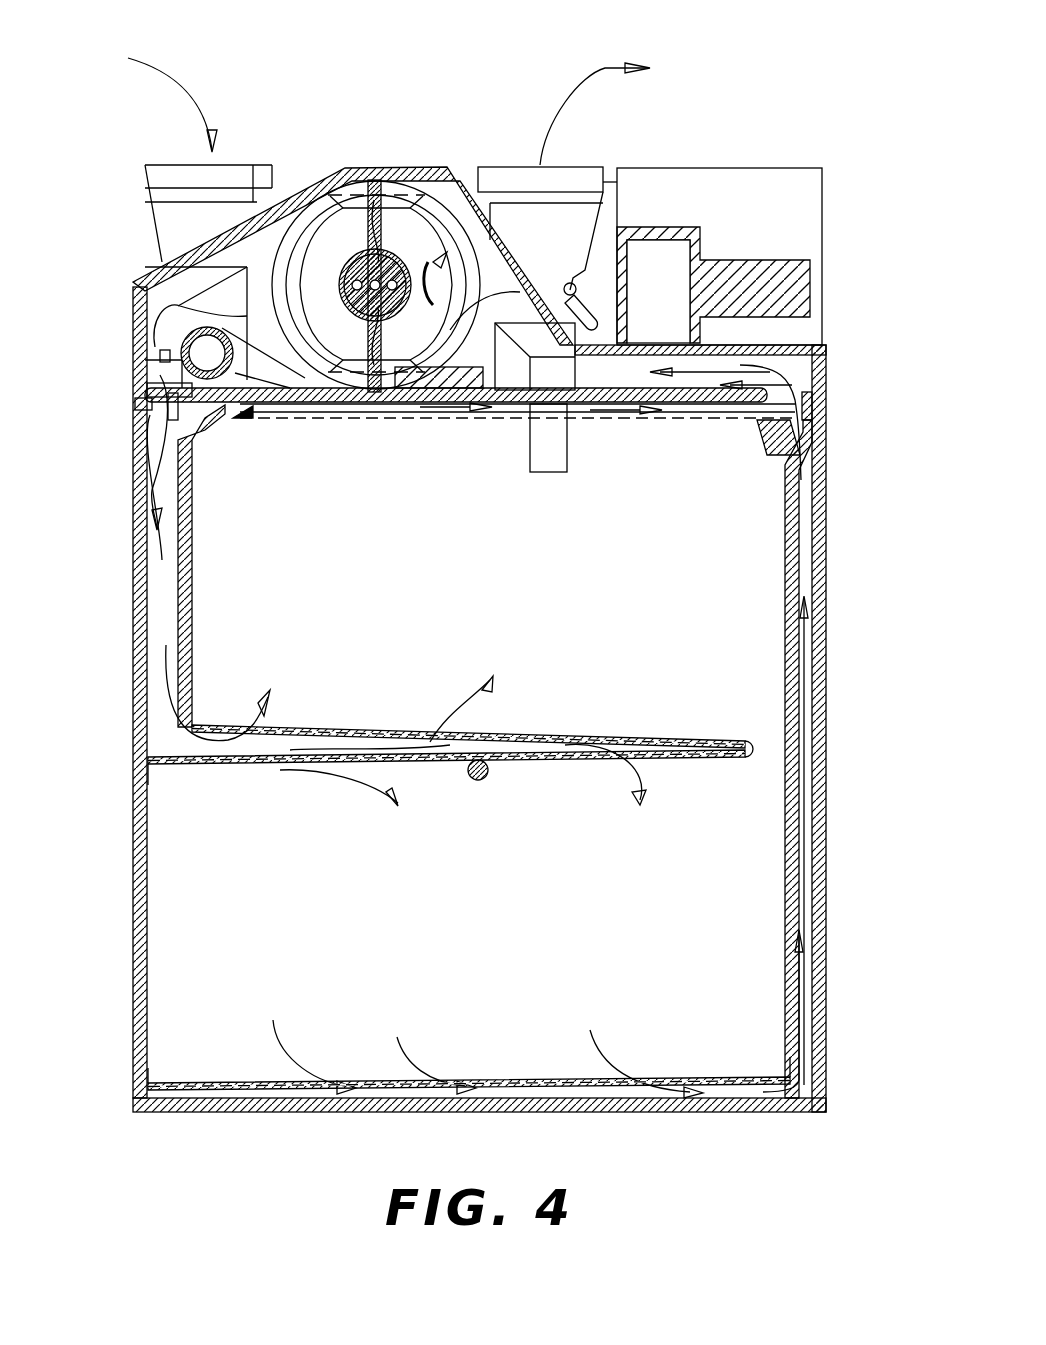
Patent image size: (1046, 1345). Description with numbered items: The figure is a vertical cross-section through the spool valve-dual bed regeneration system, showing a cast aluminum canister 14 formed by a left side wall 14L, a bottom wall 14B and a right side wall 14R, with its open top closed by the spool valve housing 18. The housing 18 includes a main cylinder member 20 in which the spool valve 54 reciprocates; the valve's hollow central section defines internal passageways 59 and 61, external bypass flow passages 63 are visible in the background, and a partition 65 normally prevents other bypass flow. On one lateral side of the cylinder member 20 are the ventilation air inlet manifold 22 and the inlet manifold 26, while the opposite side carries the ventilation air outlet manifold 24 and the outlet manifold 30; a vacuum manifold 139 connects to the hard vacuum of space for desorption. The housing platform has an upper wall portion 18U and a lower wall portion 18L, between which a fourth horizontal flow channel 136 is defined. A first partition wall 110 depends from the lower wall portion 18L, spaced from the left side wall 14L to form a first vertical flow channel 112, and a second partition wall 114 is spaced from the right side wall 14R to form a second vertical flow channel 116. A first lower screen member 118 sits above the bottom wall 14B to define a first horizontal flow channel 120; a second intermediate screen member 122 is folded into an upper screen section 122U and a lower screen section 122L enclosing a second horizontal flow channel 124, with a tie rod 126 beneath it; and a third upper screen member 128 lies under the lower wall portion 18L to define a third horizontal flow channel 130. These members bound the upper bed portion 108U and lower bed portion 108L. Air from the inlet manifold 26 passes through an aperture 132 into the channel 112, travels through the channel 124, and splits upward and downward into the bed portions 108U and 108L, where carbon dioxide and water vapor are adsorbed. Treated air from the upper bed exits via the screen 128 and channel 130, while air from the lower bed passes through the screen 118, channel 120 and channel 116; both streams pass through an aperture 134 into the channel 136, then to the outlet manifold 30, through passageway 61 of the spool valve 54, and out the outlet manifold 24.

The canister 14 is at (496, 731).
The left side wall 14L is at (133, 738).
The right side wall 14R is at (826, 748).
The bottom wall 14B is at (744, 1112).
The spool valve housing 18 is at (519, 399).
The upper wall portion 18U is at (740, 350).
The lower wall portion 18L is at (678, 420).
The main cylinder member 20 is at (374, 205).
The ventilation air inlet manifold 22 is at (165, 179).
The ventilation air outlet manifold 24 is at (572, 180).
The inlet manifold 26 is at (162, 298).
The outlet manifold 30 is at (513, 270).
The spool valve 54 is at (300, 178).
The internal passageway 59 is at (313, 278).
The internal passageway 61 is at (490, 290).
The external bypass flow passage 63 is at (400, 198).
The partition 65 is at (392, 228).
The upper bed portion 108U is at (396, 610).
The lower bed portion 108L is at (472, 921).
The first partition wall 110 is at (192, 577).
The first vertical flow channel 112 is at (158, 611).
The second partition wall 114 is at (786, 798).
The second vertical flow channel 116 is at (803, 836).
The first lower screen member 118 is at (540, 1080).
The first horizontal flow channel 120 is at (596, 1098).
The second intermediate screen member 122 is at (451, 768).
The upper screen section 122U is at (375, 735).
The lower screen section 122L is at (418, 765).
The second horizontal flow channel 124 is at (245, 745).
The tie rod 126 is at (488, 775).
The third upper screen member 128 is at (618, 420).
The third horizontal flow channel 130 is at (757, 422).
The aperture 132 is at (178, 388).
The aperture 134 is at (812, 390).
The fourth horizontal flow channel 136 is at (630, 378).
The vacuum manifold 139 is at (200, 353).